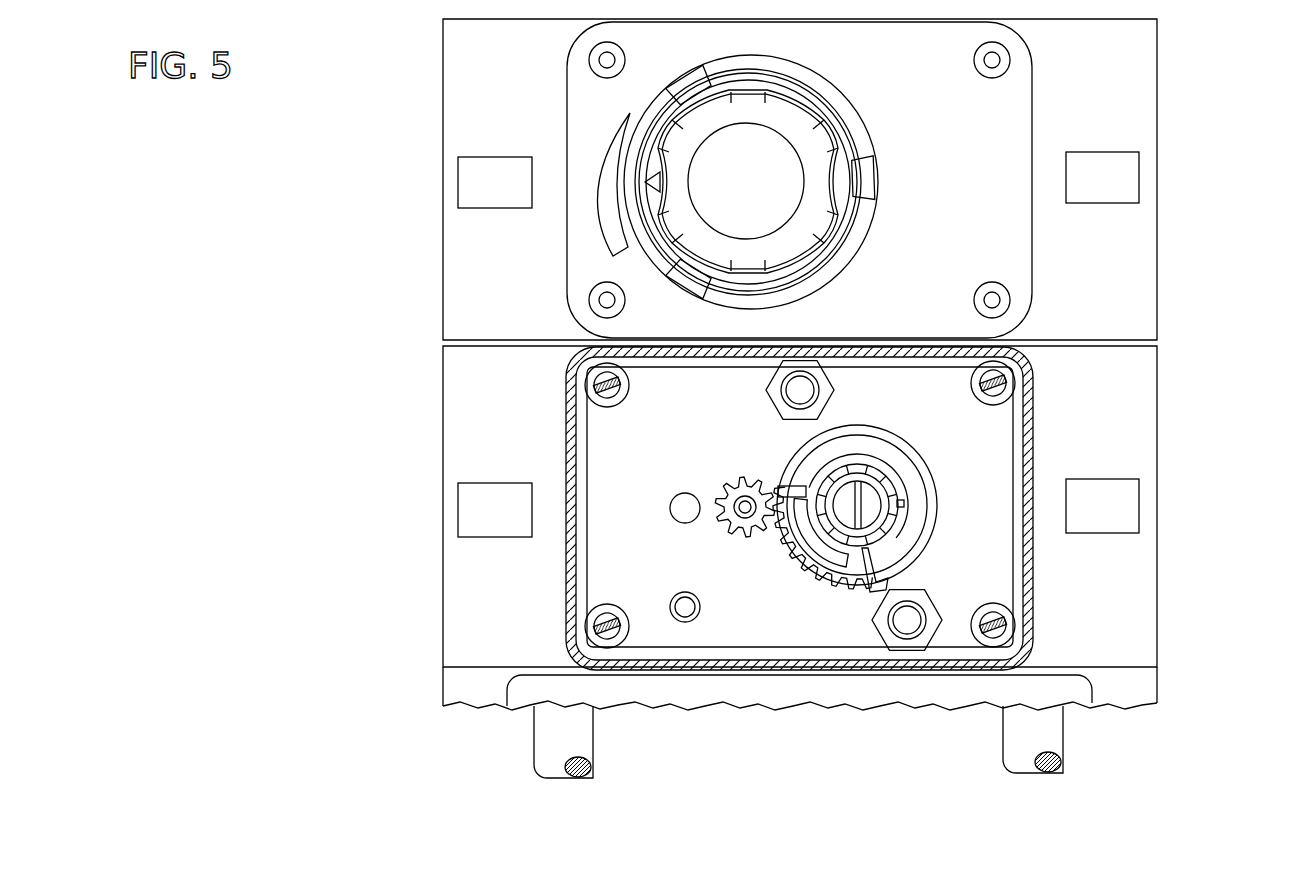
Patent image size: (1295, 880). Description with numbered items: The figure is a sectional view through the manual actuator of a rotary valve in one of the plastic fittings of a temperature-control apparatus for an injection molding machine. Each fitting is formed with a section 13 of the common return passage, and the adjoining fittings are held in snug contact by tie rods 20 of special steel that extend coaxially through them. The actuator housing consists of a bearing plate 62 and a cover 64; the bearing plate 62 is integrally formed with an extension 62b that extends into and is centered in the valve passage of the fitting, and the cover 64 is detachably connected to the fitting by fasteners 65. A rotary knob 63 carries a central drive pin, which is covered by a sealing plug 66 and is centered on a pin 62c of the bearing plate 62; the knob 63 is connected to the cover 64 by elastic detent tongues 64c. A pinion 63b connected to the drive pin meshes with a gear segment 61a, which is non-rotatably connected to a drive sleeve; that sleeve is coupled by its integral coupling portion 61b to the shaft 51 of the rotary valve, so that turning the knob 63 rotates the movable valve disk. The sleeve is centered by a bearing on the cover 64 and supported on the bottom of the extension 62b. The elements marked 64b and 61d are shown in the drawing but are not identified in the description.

The return passage section 13 is at (1110, 83).
The tie rods 20 is at (550, 752).
The shaft 51 is at (847, 498).
The gear segment 61a is at (800, 560).
The coupling portion 61b is at (867, 497).
The lever 61d is at (856, 545).
The bearing plate 62 is at (945, 433).
The extension 62b is at (925, 540).
The pin 62c is at (744, 496).
The rotary knob 63 is at (832, 222).
The pinion 63b is at (716, 517).
The cover 64 is at (980, 204).
The pawl arm 64b is at (830, 575).
The elastic detent tongues 64c is at (865, 180).
The fasteners 65 is at (985, 70).
The sealing plug 66 is at (760, 160).